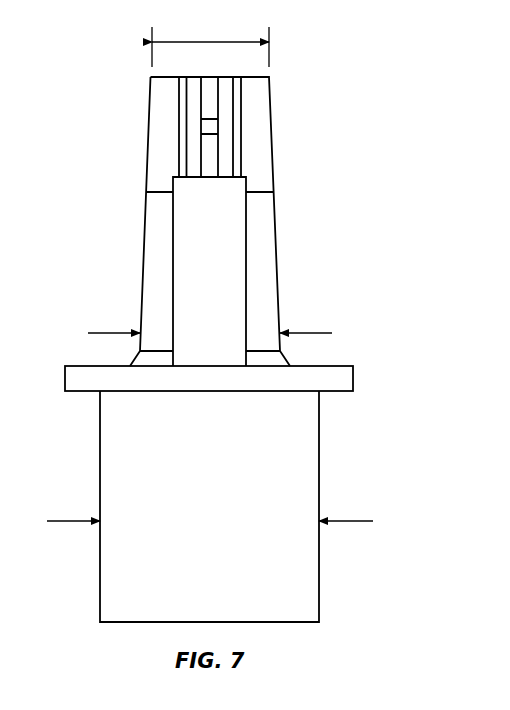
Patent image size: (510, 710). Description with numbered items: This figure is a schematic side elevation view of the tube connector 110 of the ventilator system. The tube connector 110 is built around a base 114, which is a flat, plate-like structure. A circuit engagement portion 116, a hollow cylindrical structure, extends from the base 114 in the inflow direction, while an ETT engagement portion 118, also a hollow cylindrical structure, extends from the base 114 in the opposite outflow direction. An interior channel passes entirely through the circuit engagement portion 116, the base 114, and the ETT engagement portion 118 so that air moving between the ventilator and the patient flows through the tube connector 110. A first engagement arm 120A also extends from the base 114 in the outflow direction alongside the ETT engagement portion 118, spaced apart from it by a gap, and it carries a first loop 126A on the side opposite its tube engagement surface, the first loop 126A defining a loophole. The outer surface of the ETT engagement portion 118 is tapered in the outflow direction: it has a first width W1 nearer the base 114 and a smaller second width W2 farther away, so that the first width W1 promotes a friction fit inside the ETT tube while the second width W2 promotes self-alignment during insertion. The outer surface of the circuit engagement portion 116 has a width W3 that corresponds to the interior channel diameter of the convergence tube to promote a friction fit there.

The tube connector 110 is at (355, 72).
The ETT engagement portion 118 is at (145, 155).
The first loop 126A is at (209, 104).
The first engagement arm 120A is at (246, 254).
The base 114 is at (340, 366).
The circuit engagement portion 116 is at (297, 575).
The first width W1 is at (317, 333).
The second width W2 is at (228, 42).
The width W3 is at (357, 521).